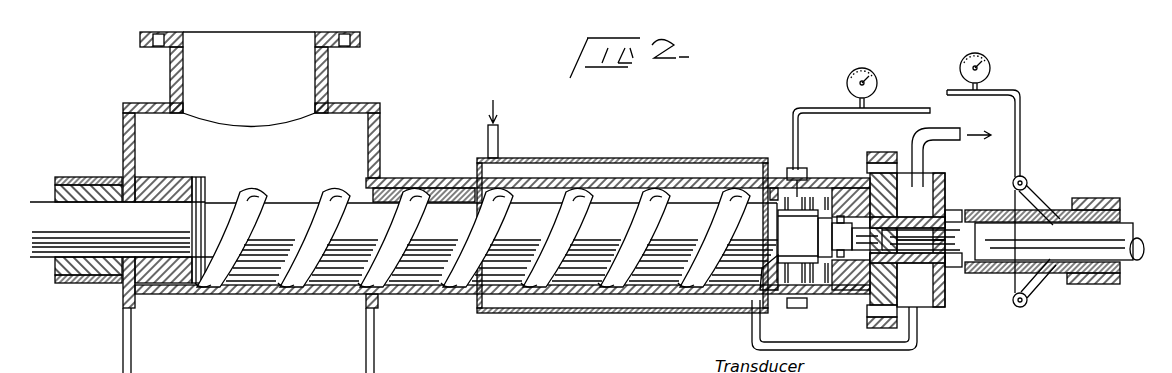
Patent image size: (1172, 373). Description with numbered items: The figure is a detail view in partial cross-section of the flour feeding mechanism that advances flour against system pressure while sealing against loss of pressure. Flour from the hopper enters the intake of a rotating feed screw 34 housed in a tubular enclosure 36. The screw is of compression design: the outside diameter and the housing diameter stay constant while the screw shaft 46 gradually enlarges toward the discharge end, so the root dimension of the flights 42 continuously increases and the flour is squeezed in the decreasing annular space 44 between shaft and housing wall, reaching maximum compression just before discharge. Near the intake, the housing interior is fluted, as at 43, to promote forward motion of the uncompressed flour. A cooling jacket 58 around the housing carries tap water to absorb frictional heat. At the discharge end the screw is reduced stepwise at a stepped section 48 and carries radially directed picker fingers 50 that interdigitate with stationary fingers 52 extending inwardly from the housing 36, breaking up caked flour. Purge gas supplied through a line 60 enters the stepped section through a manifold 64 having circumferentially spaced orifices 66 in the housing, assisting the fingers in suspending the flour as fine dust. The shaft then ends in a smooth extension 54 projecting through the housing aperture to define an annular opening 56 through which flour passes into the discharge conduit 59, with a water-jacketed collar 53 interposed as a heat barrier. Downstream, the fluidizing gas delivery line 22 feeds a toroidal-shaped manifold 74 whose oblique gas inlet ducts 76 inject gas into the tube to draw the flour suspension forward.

The fluidizing gas delivery line 22 is at (997, 92).
The feed screw 34 is at (486, 267).
The tubular enclosure 36 is at (412, 294).
The flights 42 is at (527, 277).
The fluted interior surface 43 is at (400, 188).
The annular space 44 is at (648, 282).
The screw shaft 46 is at (613, 240).
The stepped section 48 is at (842, 277).
The picker fingers 50 is at (813, 308).
The stationary fingers 52 is at (813, 181).
The water-jacketed collar 53 is at (937, 307).
The smooth extension 54 is at (832, 240).
The annular opening 56 is at (930, 184).
The cooling jacket 58 is at (619, 160).
The discharge conduit 59 is at (916, 258).
The purge gas line 60 is at (805, 108).
The manifold 64 is at (790, 172).
The orifices 66 is at (753, 178).
The toroidal-shaped manifold 74 is at (1016, 305).
The gas inlet ducts 76 is at (1038, 194).